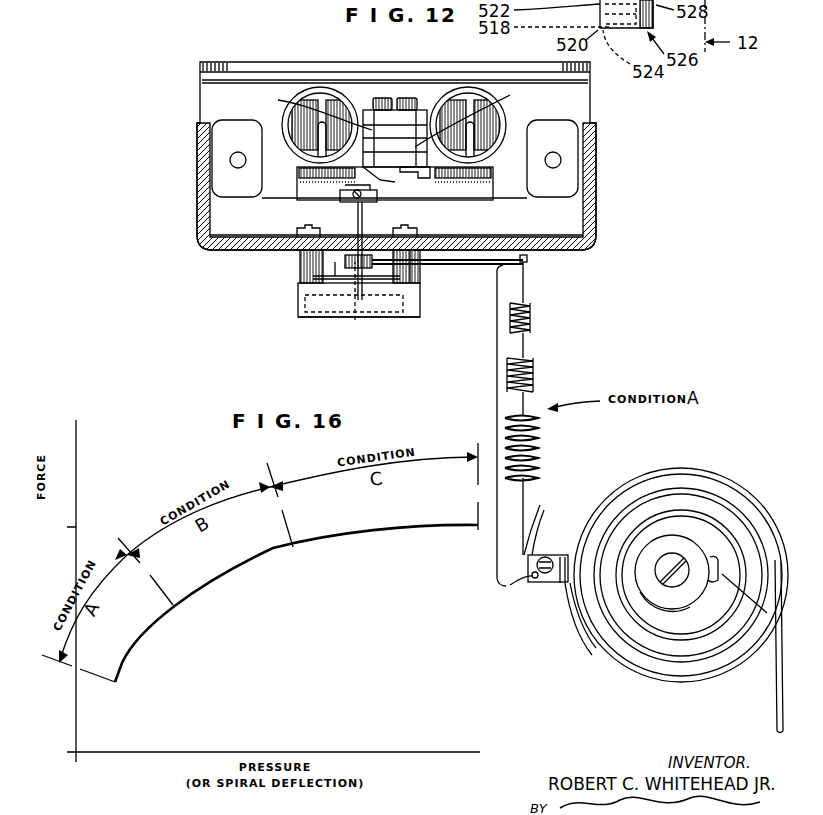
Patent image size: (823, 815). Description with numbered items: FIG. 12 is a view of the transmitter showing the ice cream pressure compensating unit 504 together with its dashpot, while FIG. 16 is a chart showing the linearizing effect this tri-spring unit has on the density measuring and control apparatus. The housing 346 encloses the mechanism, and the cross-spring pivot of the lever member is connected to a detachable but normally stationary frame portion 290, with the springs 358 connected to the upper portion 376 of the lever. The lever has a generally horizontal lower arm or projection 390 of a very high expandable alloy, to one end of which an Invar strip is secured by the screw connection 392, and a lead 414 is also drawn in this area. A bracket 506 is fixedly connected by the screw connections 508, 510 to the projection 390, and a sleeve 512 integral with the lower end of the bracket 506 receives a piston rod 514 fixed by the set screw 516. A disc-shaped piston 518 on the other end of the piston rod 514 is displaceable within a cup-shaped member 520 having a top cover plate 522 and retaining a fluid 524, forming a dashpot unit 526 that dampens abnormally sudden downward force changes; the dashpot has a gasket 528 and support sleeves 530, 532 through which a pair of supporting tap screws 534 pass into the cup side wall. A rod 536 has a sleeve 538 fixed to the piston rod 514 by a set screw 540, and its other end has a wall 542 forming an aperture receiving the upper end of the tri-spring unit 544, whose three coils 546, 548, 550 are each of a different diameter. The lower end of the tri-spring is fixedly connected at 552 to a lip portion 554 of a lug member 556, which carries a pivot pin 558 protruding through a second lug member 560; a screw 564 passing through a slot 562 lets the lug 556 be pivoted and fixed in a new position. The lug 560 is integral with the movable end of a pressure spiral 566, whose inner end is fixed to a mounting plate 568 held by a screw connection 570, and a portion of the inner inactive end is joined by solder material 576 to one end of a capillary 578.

The detachable frame portion 290 is at (248, 62).
The housing 346 is at (229, 250).
The springs 358 is at (328, 88).
The upper portion of lever member 376 is at (314, 108).
The screw connection 392 is at (409, 98).
The lead wire 414 is at (307, 108).
The lower arm or projection 390 is at (479, 115).
The screw connection 510 is at (315, 164).
The screw connection 508 is at (418, 180).
The bracket 506 is at (366, 172).
The sleeve 512 is at (352, 193).
The set screw 516 is at (345, 195).
The piston rod 514 is at (363, 213).
The supporting tap screws 534 is at (298, 231).
The cup-shaped member 520 is at (306, 315).
The piston disc 518 is at (305, 300).
The support sleeve 530 is at (310, 267).
The support sleeve 532 is at (412, 270).
The gasket 528 is at (416, 287).
The top cover plate 522 is at (325, 273).
The set screw 540 is at (372, 268).
The sleeve 538 is at (340, 264).
The fluid 524 is at (355, 320).
The dashpot unit 526 is at (424, 326).
The wall forming aperture 542 is at (528, 258).
The rod 536 is at (482, 268).
The tri-spring unit 544 is at (490, 380).
The coil 546 is at (534, 317).
The coil 548 is at (536, 383).
The coil 550 is at (540, 444).
The ice cream pressure compensating unit 504 is at (678, 377).
The lug member 556 is at (558, 585).
The pivot pin 558 is at (545, 578).
The fixed connection 552 is at (536, 582).
The screw 564 is at (528, 585).
The second lug member 560 is at (562, 553).
The lip portion 554 is at (541, 511).
The slot 562 is at (573, 628).
The pressure spiral 566 is at (696, 467).
The capillary 578 is at (778, 702).
The mounting plate 568 is at (690, 547).
The screw connection 570 is at (667, 560).
The solder material 576 is at (725, 565).